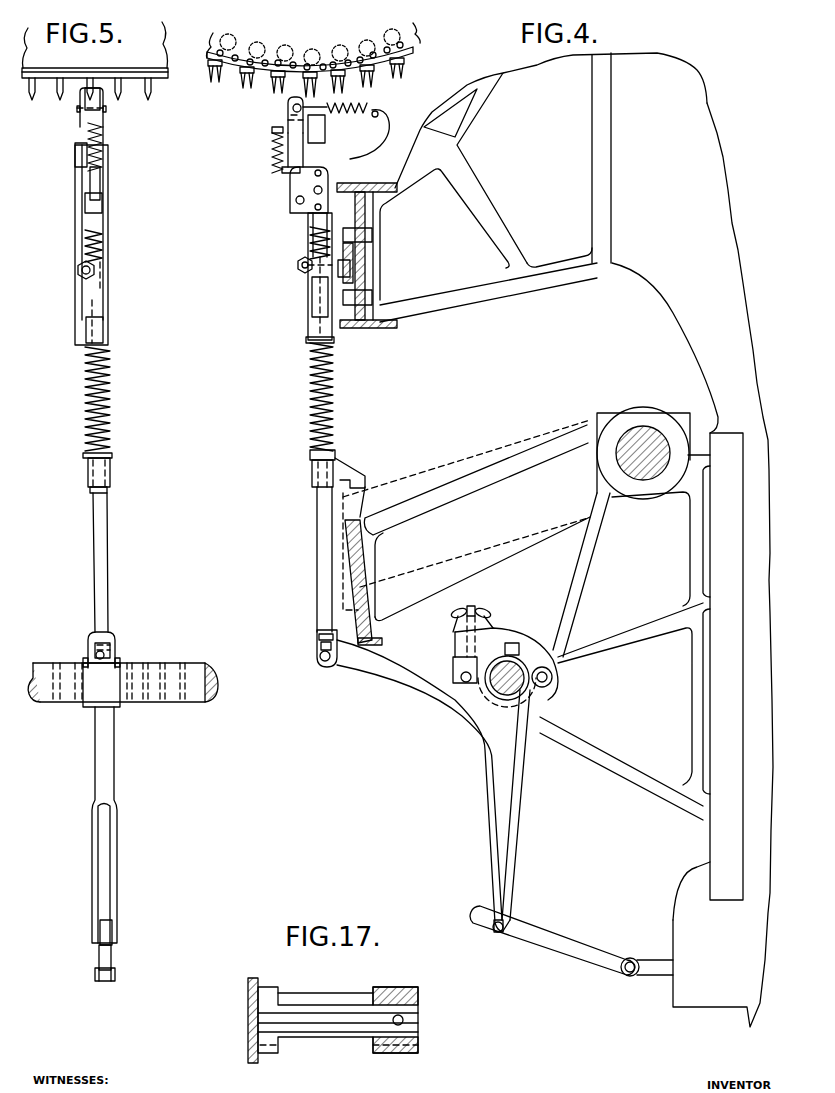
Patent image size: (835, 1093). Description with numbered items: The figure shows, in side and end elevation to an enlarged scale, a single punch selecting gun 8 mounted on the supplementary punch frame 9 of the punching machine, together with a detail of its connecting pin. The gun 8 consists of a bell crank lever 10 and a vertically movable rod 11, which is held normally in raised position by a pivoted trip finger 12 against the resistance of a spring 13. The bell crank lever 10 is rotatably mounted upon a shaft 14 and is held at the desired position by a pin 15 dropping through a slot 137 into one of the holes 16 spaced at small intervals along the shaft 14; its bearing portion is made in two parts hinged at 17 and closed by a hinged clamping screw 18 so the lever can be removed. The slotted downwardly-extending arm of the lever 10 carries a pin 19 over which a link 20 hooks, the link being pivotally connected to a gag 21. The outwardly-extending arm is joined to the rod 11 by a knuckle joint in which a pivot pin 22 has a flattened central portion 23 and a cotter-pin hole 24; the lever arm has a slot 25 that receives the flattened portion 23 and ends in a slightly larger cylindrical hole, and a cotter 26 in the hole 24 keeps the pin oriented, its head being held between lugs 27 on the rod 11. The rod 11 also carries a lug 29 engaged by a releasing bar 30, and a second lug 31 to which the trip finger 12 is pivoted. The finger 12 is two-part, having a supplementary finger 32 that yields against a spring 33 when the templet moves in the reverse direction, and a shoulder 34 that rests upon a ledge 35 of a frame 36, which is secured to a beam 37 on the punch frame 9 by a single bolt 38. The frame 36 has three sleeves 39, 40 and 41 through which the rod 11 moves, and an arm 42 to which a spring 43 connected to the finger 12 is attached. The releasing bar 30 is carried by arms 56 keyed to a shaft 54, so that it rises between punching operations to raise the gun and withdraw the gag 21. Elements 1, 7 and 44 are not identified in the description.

In FIG. 4, the machine frame 1 is at (670, 293).
In FIG. 5, the nail plate 7 is at (168, 62).
In FIG. 4, the nail plate 7 is at (421, 36).
In FIG. 4, the gun 8 is at (257, 502).
In FIG. 4, the supplementary punch frame 9 is at (470, 297).
In FIG. 5, the bell crank lever 10 is at (107, 783).
In FIG. 4, the bell crank lever 10 is at (413, 690).
In FIG. 5, the rod 11 is at (102, 578).
In FIG. 4, the rod 11 is at (318, 581).
In FIG. 4, the trip finger 12 is at (308, 157).
In FIG. 5, the spring 13 is at (110, 397).
In FIG. 4, the spring 13 is at (312, 408).
In FIG. 4, the shaft 14 is at (512, 643).
In FIG. 4, the pin 15 is at (520, 645).
In FIG. 5, the holes 16 is at (160, 707).
In FIG. 4, the hinge 17 is at (550, 682).
In FIG. 4, the clamping screw 18 is at (460, 668).
In FIG. 5, the pin 19 is at (115, 934).
In FIG. 4, the pin 19 is at (492, 935).
In FIG. 5, the link 20 is at (112, 958).
In FIG. 4, the link 20 is at (575, 943).
In FIG. 5, the gag 21 is at (115, 979).
In FIG. 4, the gag 21 is at (660, 972).
In FIG. 5, the pivot pin 22 is at (90, 655).
In FIG. 17, the pivot pin 22 is at (246, 1021).
In FIG. 4, the pivot pin 22 is at (322, 666).
In FIG. 17, the flattened central portion 23 is at (326, 1038).
In FIG. 17, the cotter-pin hole 24 is at (398, 1026).
In FIG. 5, the slot 25 is at (96, 650).
In FIG. 4, the slot 25 is at (320, 664).
In FIG. 5, the cotter 26 is at (120, 667).
In FIG. 4, the cotter 26 is at (321, 650).
In FIG. 5, the lugs 27 is at (119, 648).
In FIG. 4, the lugs 27 is at (319, 637).
In FIG. 5, the lug 29 is at (109, 474).
In FIG. 4, the lug 29 is at (343, 474).
In FIG. 4, the releasing bar 30 is at (378, 639).
In FIG. 5, the second lug 31 is at (104, 183).
In FIG. 4, the second lug 31 is at (310, 211).
In FIG. 5, the supplementary finger 32 is at (104, 116).
In FIG. 4, the supplementary finger 32 is at (288, 116).
In FIG. 5, the spring 33 is at (103, 149).
In FIG. 4, the spring 33 is at (274, 158).
In FIG. 4, the shoulder 34 is at (273, 146).
In FIG. 4, the ledge 35 is at (287, 170).
In FIG. 4, the frame 36 is at (340, 210).
In FIG. 4, the beam 37 is at (368, 326).
In FIG. 5, the bolt 38 is at (77, 270).
In FIG. 4, the bolt 38 is at (298, 268).
In FIG. 5, the sleeve 39 is at (100, 333).
In FIG. 4, the sleeve 39 is at (312, 328).
In FIG. 5, the sleeve 40 is at (103, 284).
In FIG. 4, the sleeve 40 is at (312, 278).
In FIG. 5, the sleeve 41 is at (80, 141).
In FIG. 4, the sleeve 41 is at (327, 143).
In FIG. 4, the arm 42 is at (384, 122).
In FIG. 4, the spring 43 is at (348, 109).
In FIG. 5, the nails 44 is at (33, 101).
In FIG. 4, the nails 44 is at (403, 77).
In FIG. 4, the shaft 54 is at (638, 437).
In FIG. 4, the arms 56 is at (482, 480).
In FIG. 4, the slots 137 is at (527, 650).